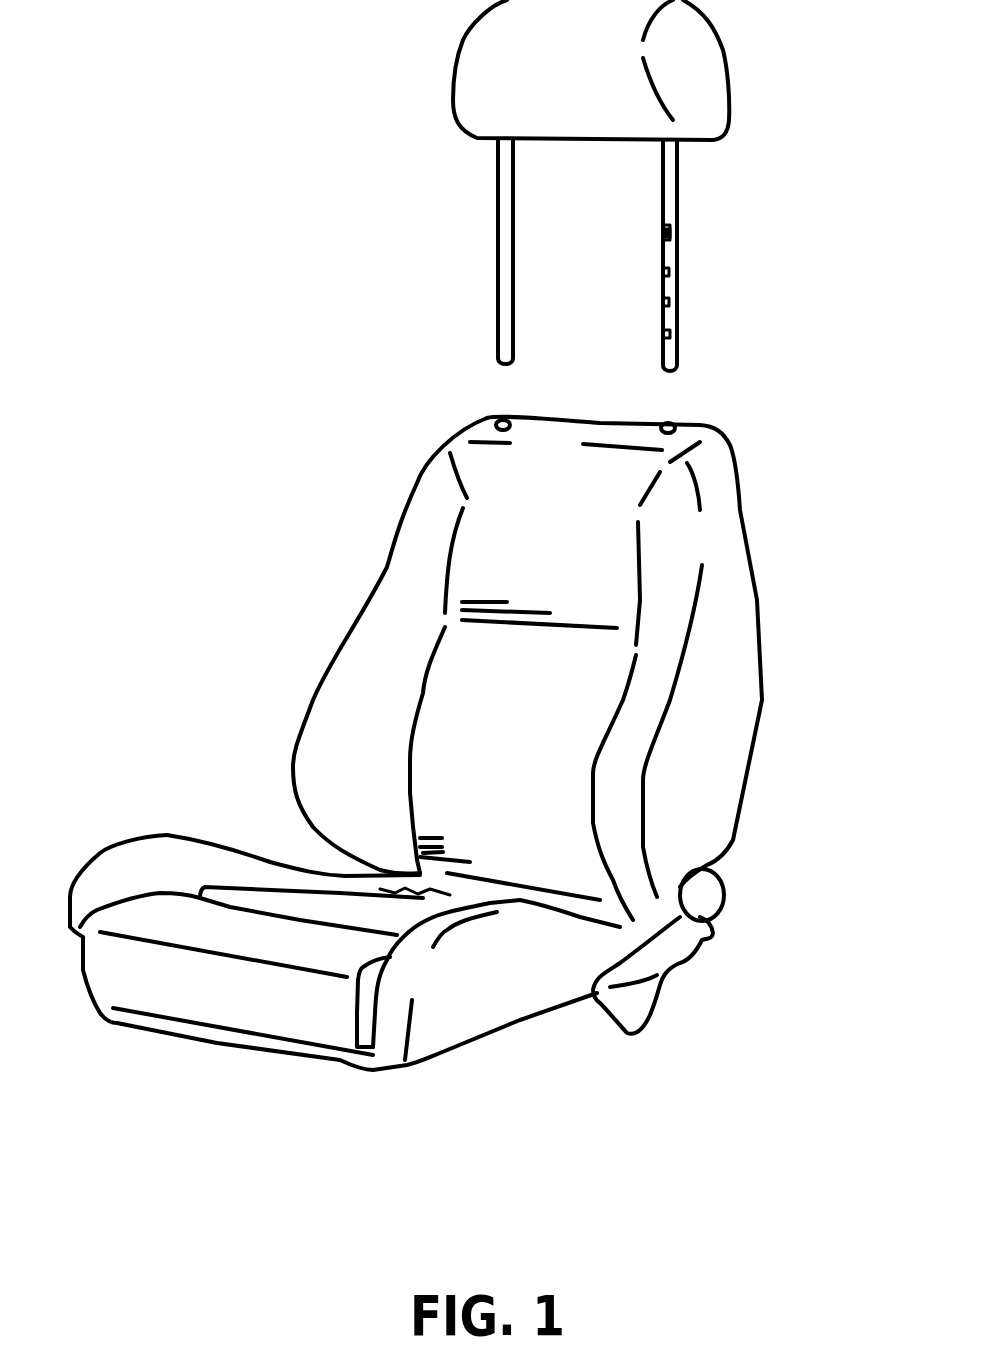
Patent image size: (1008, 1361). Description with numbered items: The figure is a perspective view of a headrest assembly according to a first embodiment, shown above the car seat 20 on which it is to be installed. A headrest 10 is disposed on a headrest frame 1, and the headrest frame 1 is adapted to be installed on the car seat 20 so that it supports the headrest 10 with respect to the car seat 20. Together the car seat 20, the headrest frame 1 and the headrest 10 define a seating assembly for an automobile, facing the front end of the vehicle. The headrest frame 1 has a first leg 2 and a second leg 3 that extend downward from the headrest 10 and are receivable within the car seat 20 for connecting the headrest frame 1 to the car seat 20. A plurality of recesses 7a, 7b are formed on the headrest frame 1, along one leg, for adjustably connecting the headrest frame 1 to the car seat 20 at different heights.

The headrest 10 is at (482, 88).
The headrest frame 1 is at (678, 183).
The first leg 2 is at (678, 272).
The second leg 3 is at (498, 255).
The recess 7a is at (663, 233).
The recess 7b is at (663, 335).
The car seat 20 is at (400, 577).